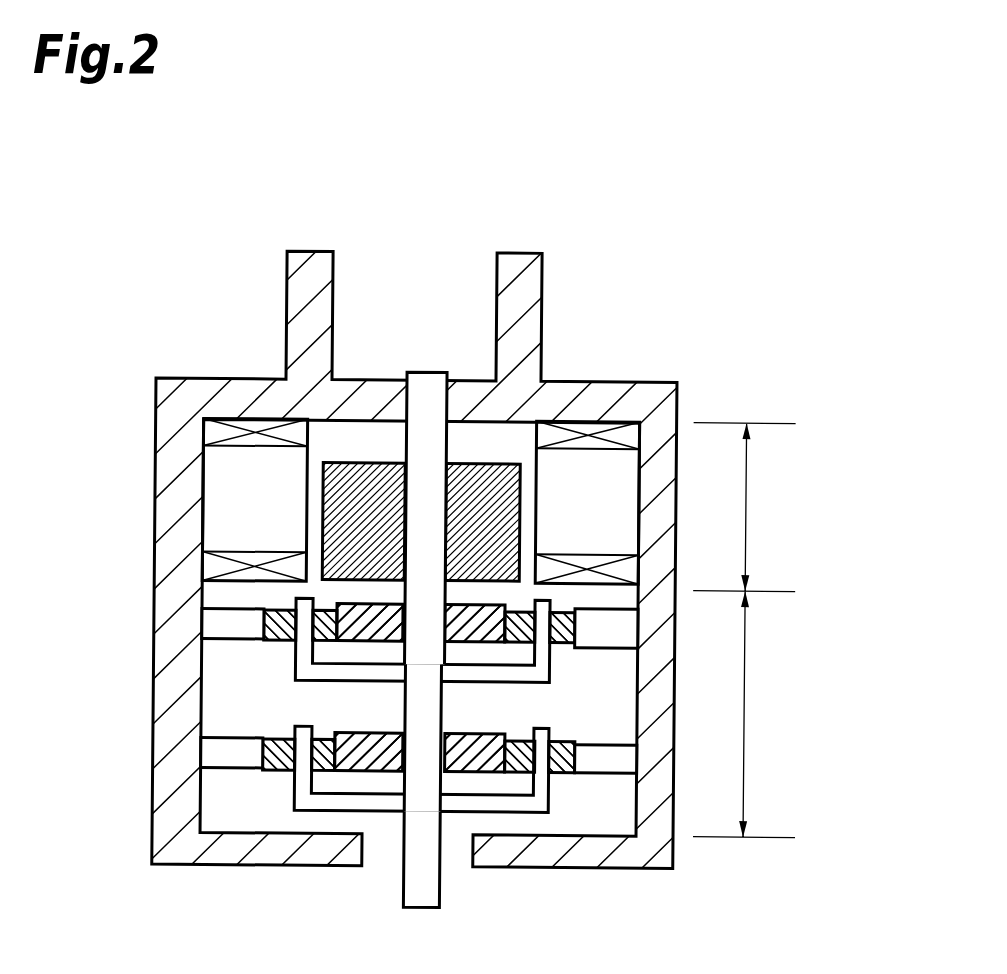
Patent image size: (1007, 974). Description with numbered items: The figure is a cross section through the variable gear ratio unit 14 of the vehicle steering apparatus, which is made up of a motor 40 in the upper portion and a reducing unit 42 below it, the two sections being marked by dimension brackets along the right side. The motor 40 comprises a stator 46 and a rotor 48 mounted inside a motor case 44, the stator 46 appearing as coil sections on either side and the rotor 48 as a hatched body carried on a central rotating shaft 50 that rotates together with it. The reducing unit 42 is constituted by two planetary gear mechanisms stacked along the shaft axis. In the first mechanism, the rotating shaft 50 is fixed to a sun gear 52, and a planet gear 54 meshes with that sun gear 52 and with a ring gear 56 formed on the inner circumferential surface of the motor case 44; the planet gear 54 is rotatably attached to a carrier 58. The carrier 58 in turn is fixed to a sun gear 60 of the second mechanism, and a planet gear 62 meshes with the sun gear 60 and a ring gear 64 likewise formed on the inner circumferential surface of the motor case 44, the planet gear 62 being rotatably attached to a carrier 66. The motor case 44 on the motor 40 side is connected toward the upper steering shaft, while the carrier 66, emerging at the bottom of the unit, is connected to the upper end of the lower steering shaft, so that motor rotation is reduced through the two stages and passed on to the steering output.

The variable gear ratio unit 14 is at (503, 487).
The motor 40 is at (746, 467).
The reducing unit 42 is at (748, 774).
The motor case 44 is at (660, 401).
The stator 46 is at (214, 482).
The rotor 48 is at (481, 462).
The rotating shaft 50 is at (445, 376).
The sun gear 52 is at (345, 640).
The planet gear 54 is at (270, 628).
The ring gear 56 is at (232, 618).
The carrier 58 is at (423, 706).
The sun gear 60 is at (376, 761).
The planet gear 62 is at (290, 765).
The ring gear 64 is at (236, 756).
The carrier 66 is at (450, 890).